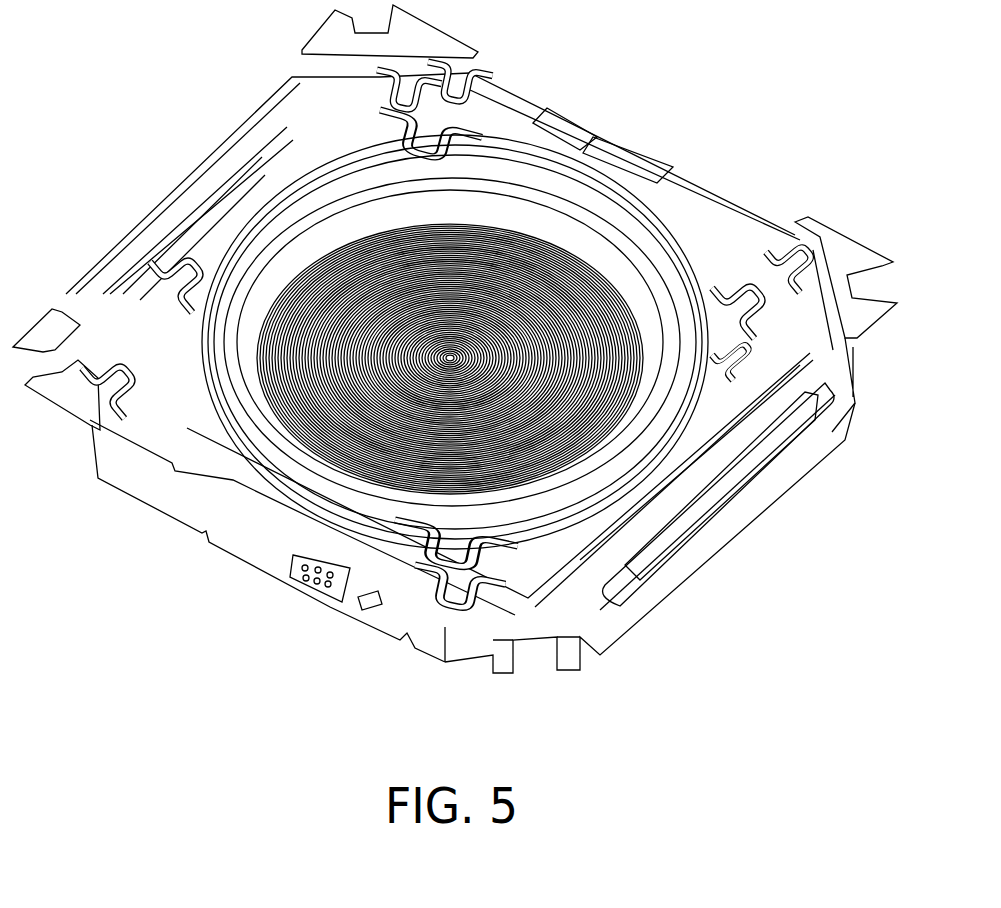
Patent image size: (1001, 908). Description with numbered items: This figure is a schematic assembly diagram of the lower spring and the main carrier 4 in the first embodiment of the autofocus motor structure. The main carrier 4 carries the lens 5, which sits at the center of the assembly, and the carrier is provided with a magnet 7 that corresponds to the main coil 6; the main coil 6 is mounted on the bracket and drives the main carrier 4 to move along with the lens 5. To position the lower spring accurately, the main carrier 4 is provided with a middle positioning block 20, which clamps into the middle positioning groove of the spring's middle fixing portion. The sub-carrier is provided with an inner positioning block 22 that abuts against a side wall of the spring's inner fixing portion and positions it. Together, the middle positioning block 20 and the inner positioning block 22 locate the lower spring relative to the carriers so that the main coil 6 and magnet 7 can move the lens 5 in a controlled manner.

The main carrier 4 is at (587, 640).
The lens 5 is at (557, 237).
The main coil 6 is at (690, 560).
The magnet 7 is at (723, 435).
The middle positioning block 20 is at (273, 492).
The inner positioning block 22 is at (690, 240).